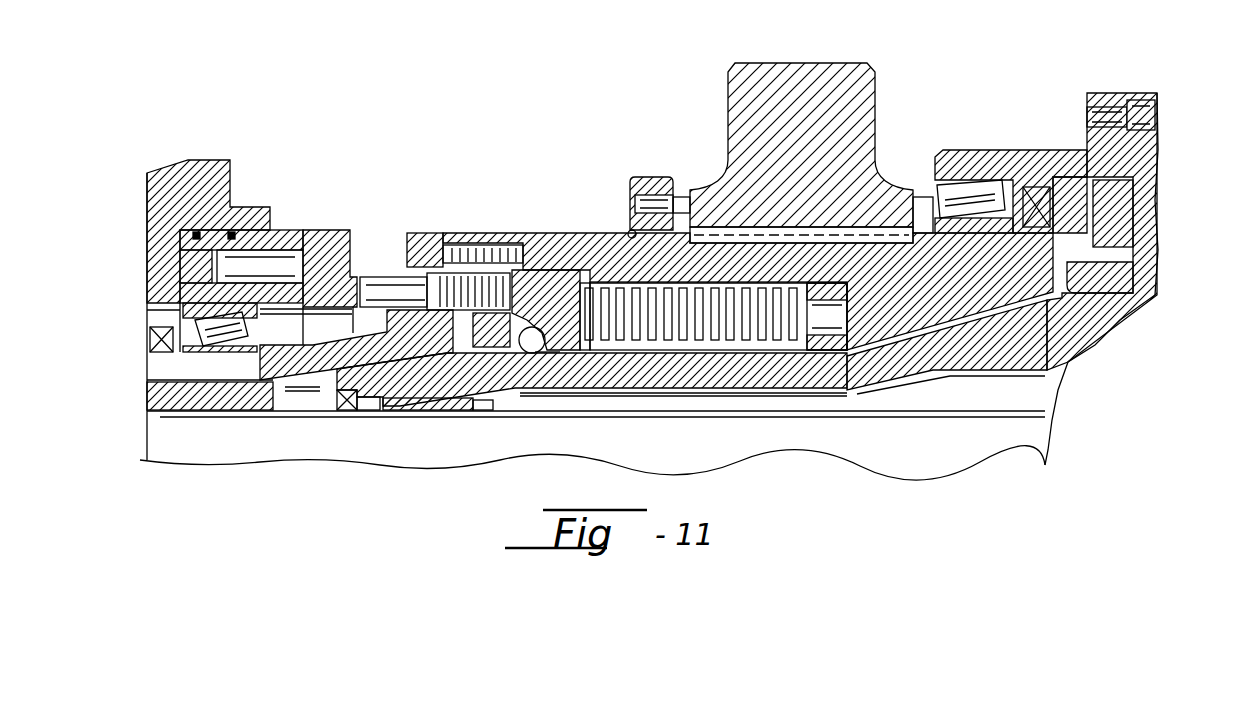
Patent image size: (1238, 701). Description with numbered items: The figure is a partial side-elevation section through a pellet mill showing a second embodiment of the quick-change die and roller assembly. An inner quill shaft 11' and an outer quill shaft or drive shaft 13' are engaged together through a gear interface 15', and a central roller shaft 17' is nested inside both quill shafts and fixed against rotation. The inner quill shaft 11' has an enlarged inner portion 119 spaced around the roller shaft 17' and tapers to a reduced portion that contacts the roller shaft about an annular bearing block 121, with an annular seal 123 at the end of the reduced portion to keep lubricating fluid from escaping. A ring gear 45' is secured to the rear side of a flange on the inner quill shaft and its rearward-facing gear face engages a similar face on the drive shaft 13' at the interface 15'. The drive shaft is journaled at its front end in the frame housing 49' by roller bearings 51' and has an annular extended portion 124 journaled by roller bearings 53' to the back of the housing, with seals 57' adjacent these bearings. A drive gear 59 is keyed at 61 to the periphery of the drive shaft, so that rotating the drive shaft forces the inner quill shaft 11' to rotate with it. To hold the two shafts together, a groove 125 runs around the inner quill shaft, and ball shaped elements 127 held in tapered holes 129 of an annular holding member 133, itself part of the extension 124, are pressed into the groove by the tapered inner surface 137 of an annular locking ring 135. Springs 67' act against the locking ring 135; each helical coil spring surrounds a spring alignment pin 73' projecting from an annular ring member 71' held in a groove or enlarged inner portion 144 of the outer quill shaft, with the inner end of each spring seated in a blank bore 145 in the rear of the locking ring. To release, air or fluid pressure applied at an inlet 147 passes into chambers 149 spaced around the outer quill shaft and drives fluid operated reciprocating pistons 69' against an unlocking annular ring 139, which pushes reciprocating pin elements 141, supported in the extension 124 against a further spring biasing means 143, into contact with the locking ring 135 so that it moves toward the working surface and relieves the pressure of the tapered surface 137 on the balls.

The inlet 147 is at (184, 162).
The chambers 149 is at (273, 229).
The fluid operated reciprocating pistons 69' is at (271, 234).
The unlocking annular ring 139 is at (337, 232).
The annular extended portion 124 is at (366, 290).
The reciprocating pin elements 141 is at (410, 236).
The spring biasing means 143 is at (460, 275).
The annular holding member 133 is at (530, 327).
The tapered inner surface 137 is at (573, 300).
The blank bore 145 is at (630, 229).
The groove or enlarged inner portion 144 is at (668, 177).
The key 61 is at (705, 230).
The drive gear 59 is at (790, 87).
The roller bearings 51' is at (963, 172).
The frame housing 49' is at (1011, 172).
The seals 57' is at (565, 247).
The ring gear 45' is at (1149, 213).
The gear interface 15' is at (1132, 278).
The outer quill shaft 13' is at (748, 291).
The inner quill shaft 11' is at (592, 379).
The roller shaft 17' is at (596, 427).
The enlarged inner portion 119 is at (1000, 377).
The springs 67' is at (716, 363).
The spring alignment pins 73' is at (812, 363).
The annular ring member 71' is at (827, 389).
The roller bearings 53' is at (170, 324).
The annular seal 123 is at (335, 410).
The annular bearing block 121 is at (412, 410).
The tapered holes 129 is at (477, 400).
The ball shaped elements 127 is at (505, 350).
The groove 125 is at (540, 355).
The annular locking ring 135 is at (588, 352).